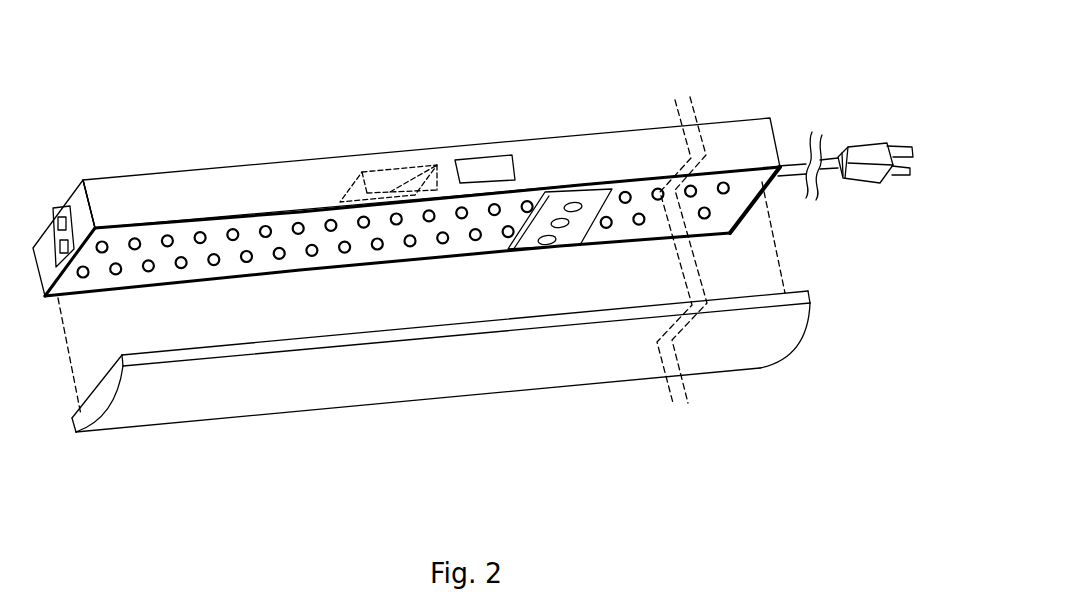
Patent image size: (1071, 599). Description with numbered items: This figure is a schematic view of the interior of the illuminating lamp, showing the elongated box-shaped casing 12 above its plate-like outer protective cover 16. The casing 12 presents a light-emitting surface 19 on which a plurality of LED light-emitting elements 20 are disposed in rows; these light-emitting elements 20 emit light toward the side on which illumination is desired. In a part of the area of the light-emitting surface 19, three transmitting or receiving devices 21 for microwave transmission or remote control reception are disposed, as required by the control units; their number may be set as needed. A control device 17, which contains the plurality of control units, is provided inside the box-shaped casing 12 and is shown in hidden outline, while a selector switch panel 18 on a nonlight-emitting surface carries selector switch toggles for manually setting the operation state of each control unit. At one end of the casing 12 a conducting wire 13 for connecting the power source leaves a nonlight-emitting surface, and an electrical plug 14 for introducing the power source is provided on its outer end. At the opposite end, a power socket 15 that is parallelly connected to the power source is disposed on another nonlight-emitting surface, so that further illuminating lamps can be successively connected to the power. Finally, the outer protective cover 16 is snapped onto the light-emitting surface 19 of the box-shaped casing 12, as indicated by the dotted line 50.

The box-shaped casing 12 is at (338, 101).
The conducting wire 13 is at (788, 170).
The electrical plug 14 is at (876, 158).
The power socket 15 is at (58, 226).
The outer protective cover 16 is at (361, 434).
The control device 17 is at (386, 188).
The selector switch panel 18 is at (483, 166).
The light-emitting surface 19 is at (430, 232).
The LED light-emitting elements 20 is at (277, 256).
The transmitting or receiving devices 21 is at (551, 244).
The dotted line 50 is at (422, 298).